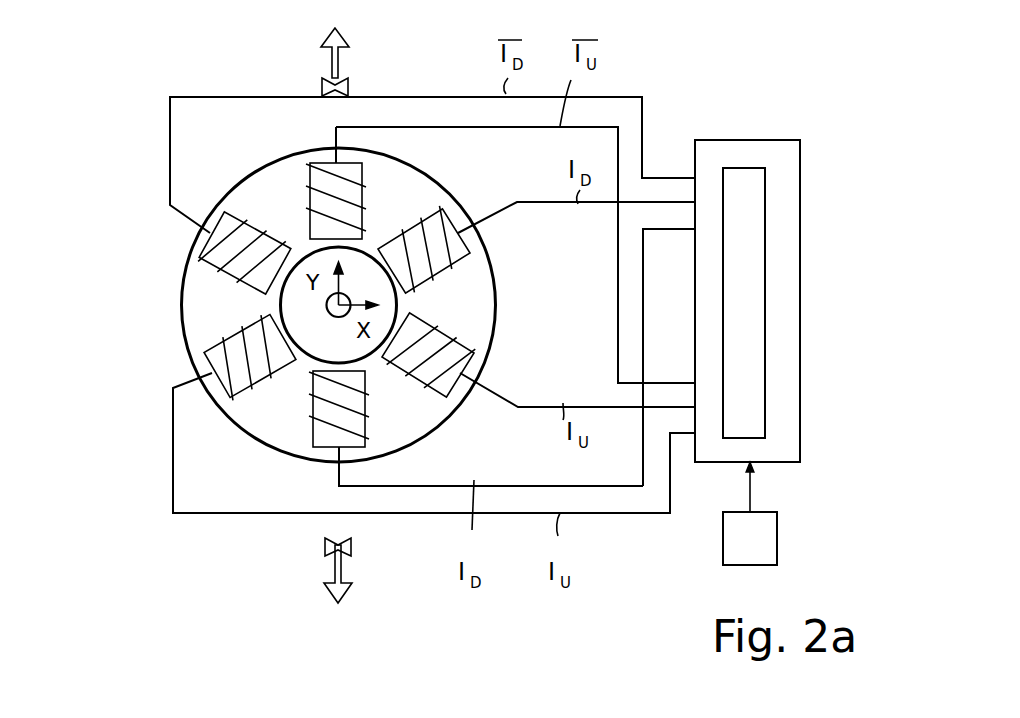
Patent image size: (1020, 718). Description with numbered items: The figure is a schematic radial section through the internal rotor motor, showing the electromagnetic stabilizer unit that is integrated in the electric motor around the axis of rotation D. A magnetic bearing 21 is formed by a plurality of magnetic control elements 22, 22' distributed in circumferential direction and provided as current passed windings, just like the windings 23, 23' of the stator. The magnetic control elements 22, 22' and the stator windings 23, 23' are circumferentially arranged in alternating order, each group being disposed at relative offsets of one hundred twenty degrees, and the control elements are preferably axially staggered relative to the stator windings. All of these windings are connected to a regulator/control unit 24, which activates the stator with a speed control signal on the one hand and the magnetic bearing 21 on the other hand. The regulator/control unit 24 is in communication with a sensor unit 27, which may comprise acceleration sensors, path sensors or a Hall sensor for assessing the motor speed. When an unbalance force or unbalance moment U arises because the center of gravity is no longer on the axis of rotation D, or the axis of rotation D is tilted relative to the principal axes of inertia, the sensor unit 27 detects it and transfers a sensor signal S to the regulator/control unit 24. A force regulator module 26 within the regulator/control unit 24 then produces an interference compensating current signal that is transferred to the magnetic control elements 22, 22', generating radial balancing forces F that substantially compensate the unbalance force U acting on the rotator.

The magnetic bearing 21 is at (262, 484).
The magnetic control element 22 is at (400, 183).
The magnetic control element 22' is at (403, 412).
The winding 23 is at (535, 249).
The winding 23' is at (395, 197).
The regulator/control unit 24 is at (803, 258).
The force regulator module 26 is at (766, 343).
The sensor unit 27 is at (778, 540).
The axis of rotation D is at (332, 313).
The sensor signal S is at (753, 490).
The unbalance force U is at (340, 60).
The radial balancing force F is at (361, 589).